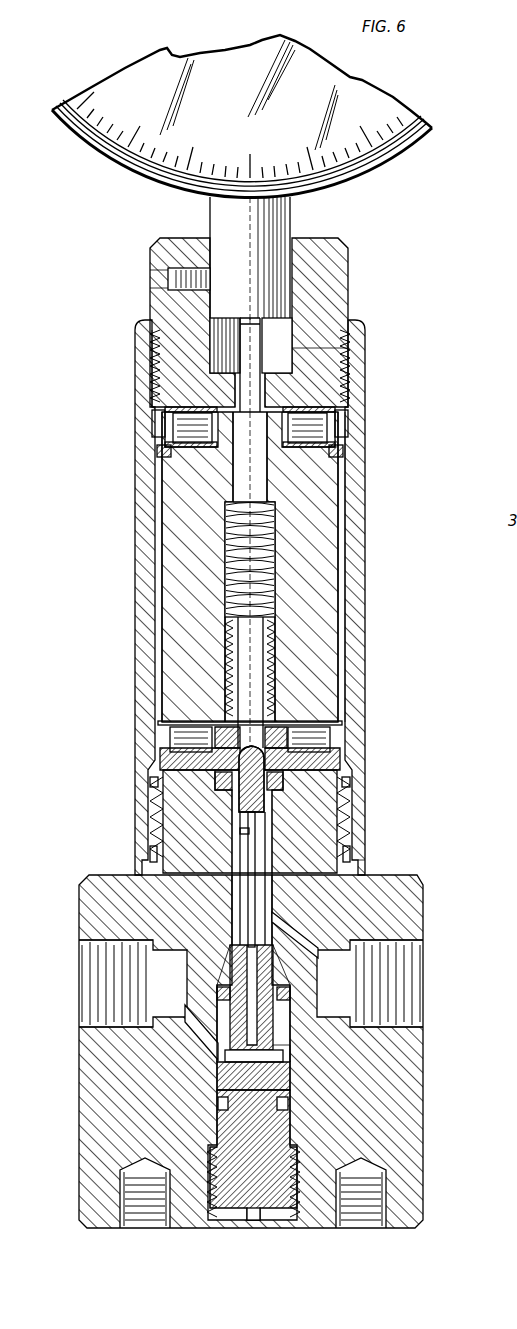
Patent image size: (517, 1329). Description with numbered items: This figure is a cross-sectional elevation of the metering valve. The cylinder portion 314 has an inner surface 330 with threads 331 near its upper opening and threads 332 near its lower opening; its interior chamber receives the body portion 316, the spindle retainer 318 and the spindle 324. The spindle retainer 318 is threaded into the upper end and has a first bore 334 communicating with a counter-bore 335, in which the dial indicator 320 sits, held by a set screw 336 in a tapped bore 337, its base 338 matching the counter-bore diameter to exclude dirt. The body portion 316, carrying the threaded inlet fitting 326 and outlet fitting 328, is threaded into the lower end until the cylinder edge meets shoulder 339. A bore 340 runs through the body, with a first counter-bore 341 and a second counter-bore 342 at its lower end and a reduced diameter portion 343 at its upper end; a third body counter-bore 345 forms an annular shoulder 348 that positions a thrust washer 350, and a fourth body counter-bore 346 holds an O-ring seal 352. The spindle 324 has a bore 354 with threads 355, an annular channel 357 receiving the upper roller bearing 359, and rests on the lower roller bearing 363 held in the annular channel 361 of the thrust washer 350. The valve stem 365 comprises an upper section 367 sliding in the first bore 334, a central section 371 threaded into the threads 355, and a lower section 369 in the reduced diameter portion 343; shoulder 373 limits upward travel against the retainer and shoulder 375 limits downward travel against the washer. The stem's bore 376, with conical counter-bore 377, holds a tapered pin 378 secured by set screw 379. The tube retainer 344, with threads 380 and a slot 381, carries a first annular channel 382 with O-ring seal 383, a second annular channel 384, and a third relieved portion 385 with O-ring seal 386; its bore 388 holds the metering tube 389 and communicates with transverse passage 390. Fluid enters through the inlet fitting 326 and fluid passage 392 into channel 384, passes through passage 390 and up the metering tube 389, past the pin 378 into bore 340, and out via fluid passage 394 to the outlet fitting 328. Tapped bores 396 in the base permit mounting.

The cylinder portion 314 is at (358, 565).
The body portion 316 is at (415, 1170).
The spindle retainer 318 is at (348, 258).
The dial indicator 320 is at (395, 178).
The spindle 324 is at (175, 522).
The inlet fitting 326 is at (95, 1010).
The outlet fitting 328 is at (425, 1000).
The inner surface 330 is at (340, 530).
The threads 331 is at (150, 398).
The threads 332 is at (345, 818).
The first bore 334 is at (240, 387).
The counter-bore 335 is at (290, 348).
The set screw 336 is at (210, 280).
The tapped bore 337 is at (152, 283).
The base 338 is at (215, 210).
The shoulder 339 is at (382, 875).
The bore 340 is at (272, 878).
The first counter-bore 341 is at (230, 975).
The second counter-bore 342 is at (222, 1120).
The reduced diameter portion 343 is at (239, 806).
The tube retainer 344 is at (275, 1212).
The third body counter-bore 345 is at (290, 775).
The fourth body counter-bore 346 is at (216, 786).
The annular shoulder 348 is at (330, 765).
The thrust washer 350 is at (175, 762).
The O-ring seal 352 is at (272, 810).
The bore 354 is at (235, 466).
The threads 355 is at (230, 655).
The annular channel 357 is at (158, 432).
The upper roller bearing 359 is at (340, 427).
The annular channel 361 is at (180, 745).
The lower roller bearing 363 is at (322, 735).
The valve stem 365 is at (237, 327).
The upper section 367 is at (265, 345).
The lower section 369 is at (250, 700).
The central section 371 is at (245, 518).
The annular shoulder 373 is at (268, 402).
The annular shoulder 375 is at (240, 616).
The bore 376 is at (256, 845).
The conical counter-bore 377 is at (240, 866).
The tapered pin 378 is at (257, 900).
The set screw 379 is at (240, 832).
The threads 380 is at (212, 1215).
The slot 381 is at (253, 1222).
The first annular channel 382 is at (218, 1103).
The O-ring seal 383 is at (290, 1103).
The second annular channel 384 is at (290, 1070).
The third relieved portion 385 is at (290, 1050).
The O-ring seal 386 is at (217, 993).
The bore 388 is at (232, 936).
The metering tube 389 is at (230, 940).
The transverse passage 390 is at (228, 1058).
The fluid passage 392 is at (200, 1035).
The fluid passage 394 is at (300, 935).
The tapped bores 396 is at (132, 1228).